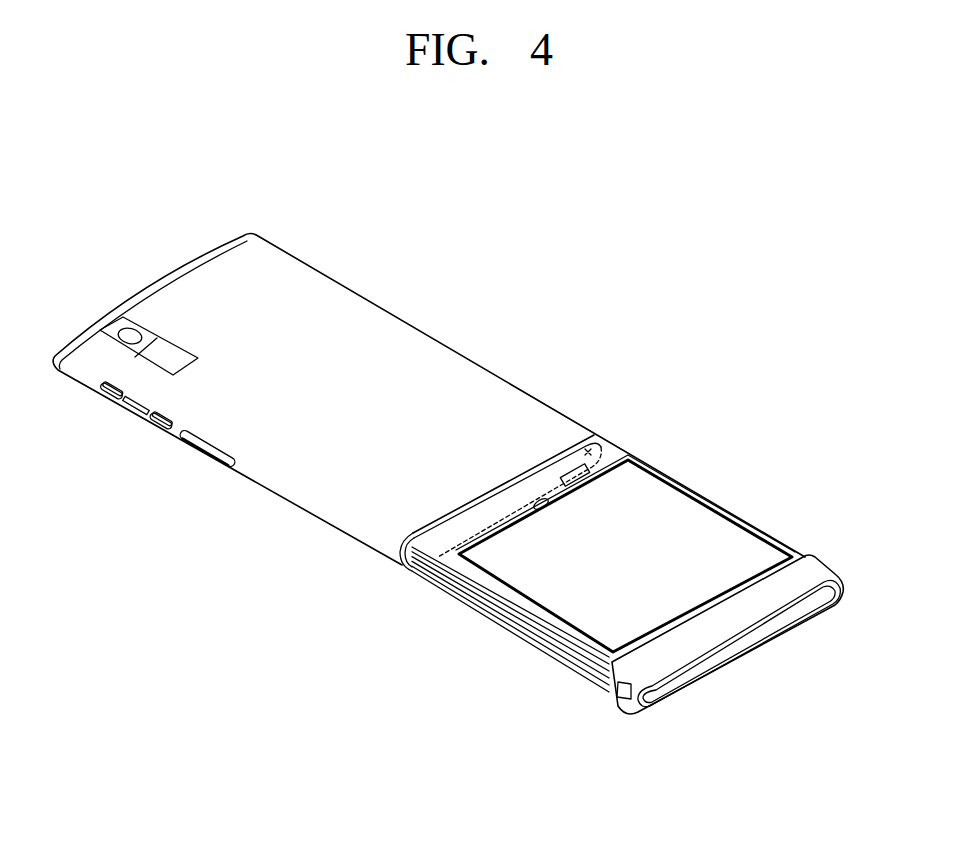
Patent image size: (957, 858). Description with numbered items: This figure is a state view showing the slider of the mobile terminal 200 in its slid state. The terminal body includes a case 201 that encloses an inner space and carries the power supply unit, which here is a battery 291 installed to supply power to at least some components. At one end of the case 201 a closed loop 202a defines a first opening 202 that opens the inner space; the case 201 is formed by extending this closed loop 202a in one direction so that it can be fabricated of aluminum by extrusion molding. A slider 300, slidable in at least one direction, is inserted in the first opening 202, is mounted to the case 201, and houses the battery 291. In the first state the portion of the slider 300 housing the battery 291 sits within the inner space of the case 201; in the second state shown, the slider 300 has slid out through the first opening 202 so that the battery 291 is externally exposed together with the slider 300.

The mobile terminal 200 is at (403, 282).
The case 201 is at (462, 370).
The first opening 202 is at (618, 455).
The closed loop 202a is at (598, 440).
The battery 291 is at (682, 522).
The slider 300 is at (822, 551).